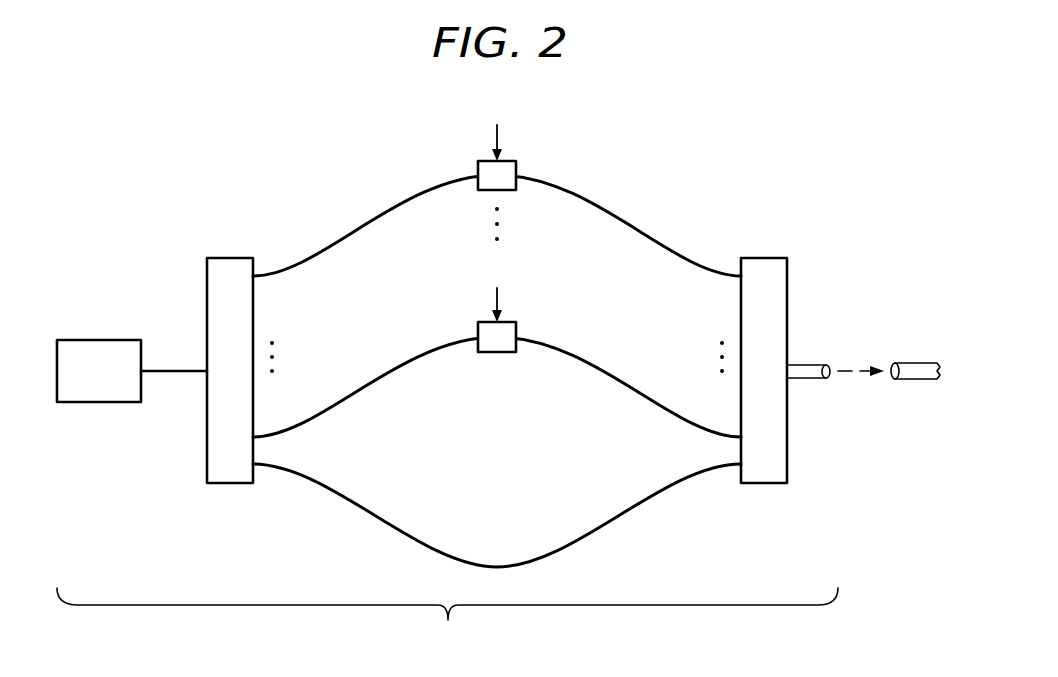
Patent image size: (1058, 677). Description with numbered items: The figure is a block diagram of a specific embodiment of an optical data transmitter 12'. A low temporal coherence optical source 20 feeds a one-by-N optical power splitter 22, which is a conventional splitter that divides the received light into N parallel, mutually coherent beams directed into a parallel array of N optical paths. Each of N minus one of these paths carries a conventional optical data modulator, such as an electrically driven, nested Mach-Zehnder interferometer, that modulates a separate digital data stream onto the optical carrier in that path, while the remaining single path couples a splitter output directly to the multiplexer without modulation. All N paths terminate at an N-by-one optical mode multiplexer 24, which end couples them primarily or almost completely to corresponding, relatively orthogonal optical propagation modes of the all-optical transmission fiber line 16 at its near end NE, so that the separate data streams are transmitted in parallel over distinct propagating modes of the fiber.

The optical data transmitter 12' is at (447, 624).
The low temporal coherence optical source 20 is at (112, 384).
The 1×N optical power splitter 22 is at (244, 384).
The N×1 optical mode multiplexer 24 is at (778, 384).
The all-optical transmission fiber line 16 is at (920, 363).
The near end NE is at (893, 380).